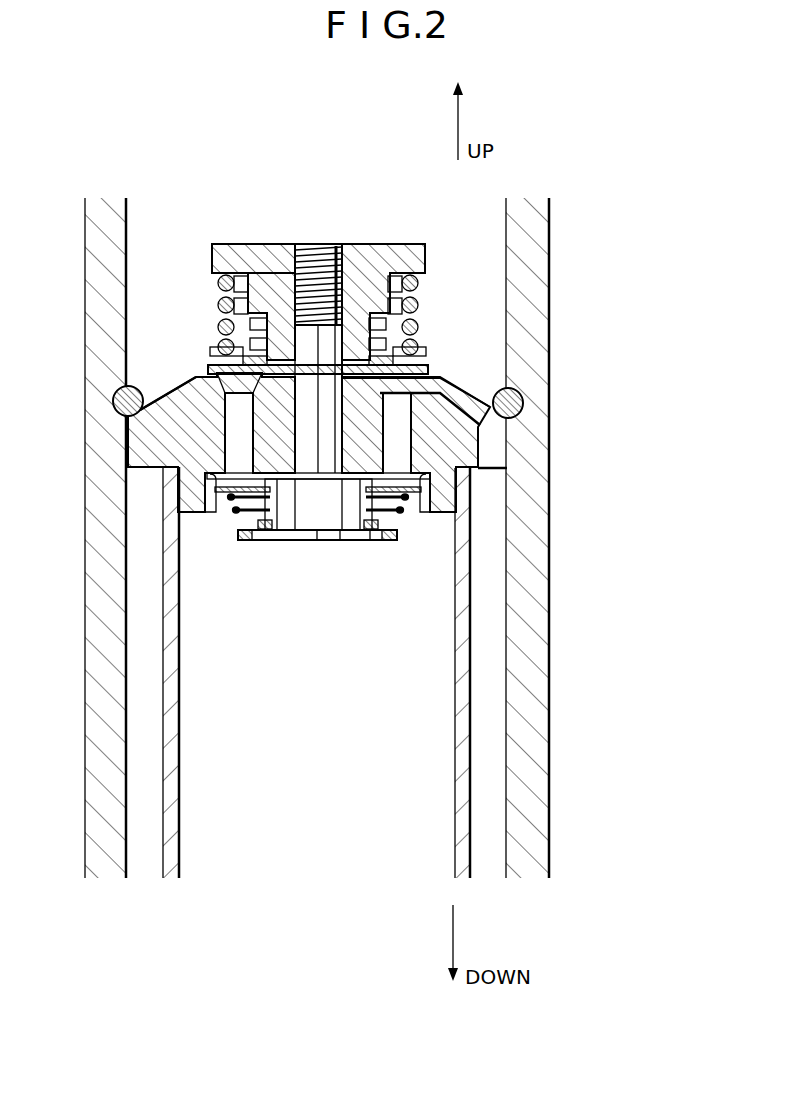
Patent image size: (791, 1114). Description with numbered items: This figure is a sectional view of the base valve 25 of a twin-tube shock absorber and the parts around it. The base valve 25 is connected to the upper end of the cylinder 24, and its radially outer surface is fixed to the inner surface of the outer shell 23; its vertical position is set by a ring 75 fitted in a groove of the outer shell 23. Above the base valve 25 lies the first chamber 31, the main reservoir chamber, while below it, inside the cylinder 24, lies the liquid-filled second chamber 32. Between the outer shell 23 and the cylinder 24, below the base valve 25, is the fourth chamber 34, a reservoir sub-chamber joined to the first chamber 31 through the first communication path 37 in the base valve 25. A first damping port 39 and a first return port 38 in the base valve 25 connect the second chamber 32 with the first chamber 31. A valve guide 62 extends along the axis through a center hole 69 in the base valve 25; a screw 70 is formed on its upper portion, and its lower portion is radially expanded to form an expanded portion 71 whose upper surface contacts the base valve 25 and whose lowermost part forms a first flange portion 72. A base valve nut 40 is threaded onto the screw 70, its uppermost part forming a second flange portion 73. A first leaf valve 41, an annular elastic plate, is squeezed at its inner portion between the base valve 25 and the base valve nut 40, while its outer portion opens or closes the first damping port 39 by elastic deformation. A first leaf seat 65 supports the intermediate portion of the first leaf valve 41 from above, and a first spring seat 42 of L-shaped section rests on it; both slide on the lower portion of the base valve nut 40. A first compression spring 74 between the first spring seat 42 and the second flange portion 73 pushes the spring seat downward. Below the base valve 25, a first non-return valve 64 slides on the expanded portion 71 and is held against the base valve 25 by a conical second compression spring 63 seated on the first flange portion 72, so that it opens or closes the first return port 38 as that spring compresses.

The outer shell 23 is at (537, 622).
The cylinder 24 is at (463, 662).
The base valve 25 is at (450, 370).
The first chamber 31 is at (498, 248).
The second chamber 32 is at (445, 585).
The fourth chamber 34 is at (493, 508).
The first communication path 37 is at (490, 377).
The first return port 38 is at (425, 472).
The first damping port 39 is at (237, 443).
The base valve nut 40 is at (262, 245).
The first leaf valve 41 is at (217, 370).
The first spring seat 42 is at (222, 350).
The valve guide 62 is at (307, 532).
The second compression spring 63 is at (220, 500).
The first non-return valve 64 is at (227, 492).
The first leaf seat 65 is at (243, 362).
The center hole 69 is at (298, 413).
The screw 70 is at (312, 265).
The expanded portion 71 is at (248, 521).
The first flange portion 72 is at (253, 540).
The second flange portion 73 is at (235, 262).
The first compression spring 74 is at (430, 282).
The ring 75 is at (525, 407).